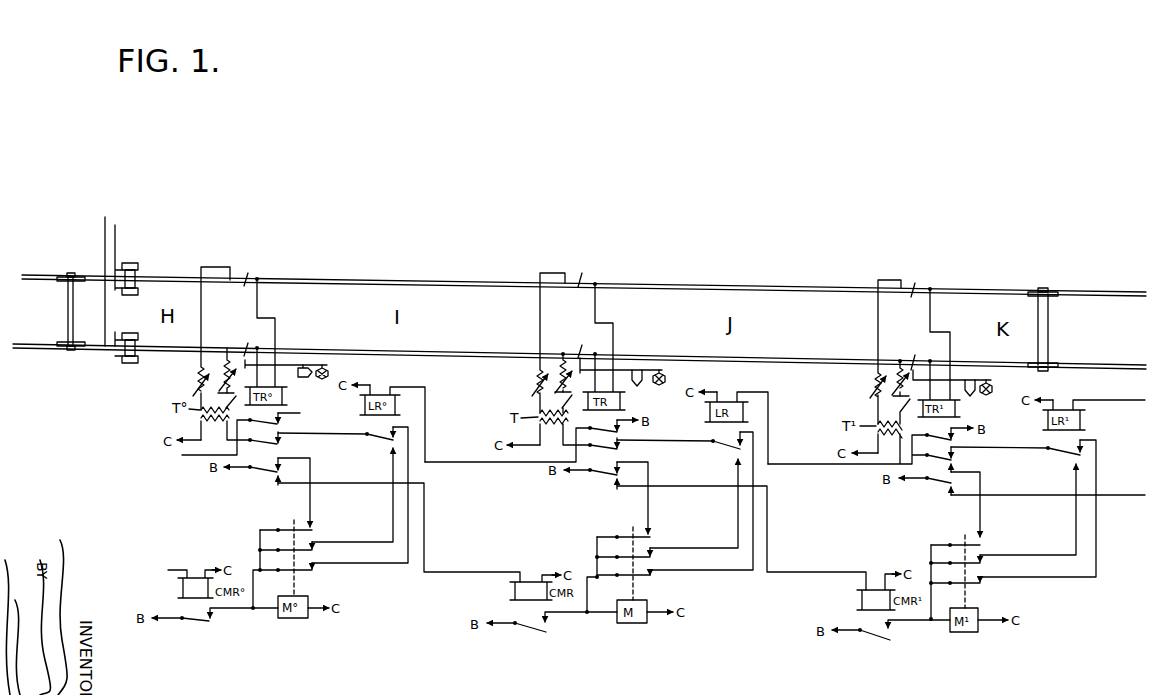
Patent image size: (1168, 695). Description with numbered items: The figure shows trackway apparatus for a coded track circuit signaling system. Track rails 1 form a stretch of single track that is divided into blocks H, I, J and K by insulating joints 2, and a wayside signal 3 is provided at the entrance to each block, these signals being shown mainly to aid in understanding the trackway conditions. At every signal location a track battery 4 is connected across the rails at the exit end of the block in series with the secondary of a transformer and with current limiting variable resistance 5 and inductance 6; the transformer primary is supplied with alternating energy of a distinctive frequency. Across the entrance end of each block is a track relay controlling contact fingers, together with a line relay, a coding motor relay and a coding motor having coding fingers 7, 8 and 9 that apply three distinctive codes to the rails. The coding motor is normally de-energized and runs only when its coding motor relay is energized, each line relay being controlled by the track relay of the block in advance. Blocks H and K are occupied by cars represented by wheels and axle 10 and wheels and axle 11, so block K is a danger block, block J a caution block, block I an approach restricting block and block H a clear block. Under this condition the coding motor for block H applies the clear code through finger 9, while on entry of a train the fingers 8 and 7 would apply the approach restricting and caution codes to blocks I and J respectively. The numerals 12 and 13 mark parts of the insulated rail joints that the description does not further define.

The track rails 1 is at (457, 283).
The insulating joints 2 is at (245, 342).
The wayside signal 3 is at (660, 386).
The track battery 4 is at (568, 408).
The variable resistance 5 is at (568, 374).
The inductance 6 is at (534, 381).
The coding finger 7 is at (629, 534).
The coding finger 8 is at (653, 558).
The coding finger 9 is at (625, 576).
The wheels and axle 10 is at (65, 313).
The wheels and axle 11 is at (1048, 335).
The insulated rail joint 12 is at (136, 274).
The insulated rail joint fastening 13 is at (131, 263).